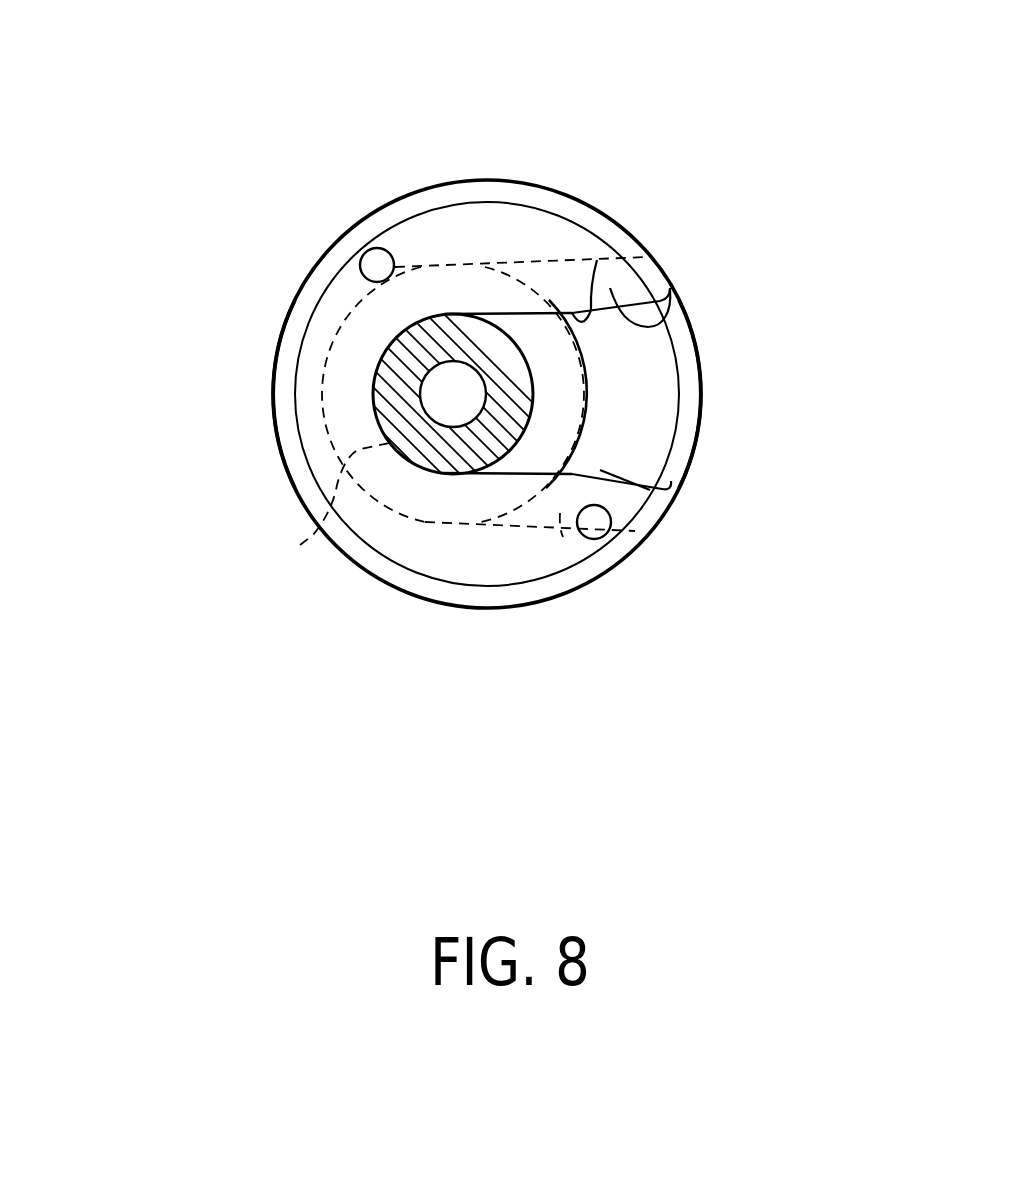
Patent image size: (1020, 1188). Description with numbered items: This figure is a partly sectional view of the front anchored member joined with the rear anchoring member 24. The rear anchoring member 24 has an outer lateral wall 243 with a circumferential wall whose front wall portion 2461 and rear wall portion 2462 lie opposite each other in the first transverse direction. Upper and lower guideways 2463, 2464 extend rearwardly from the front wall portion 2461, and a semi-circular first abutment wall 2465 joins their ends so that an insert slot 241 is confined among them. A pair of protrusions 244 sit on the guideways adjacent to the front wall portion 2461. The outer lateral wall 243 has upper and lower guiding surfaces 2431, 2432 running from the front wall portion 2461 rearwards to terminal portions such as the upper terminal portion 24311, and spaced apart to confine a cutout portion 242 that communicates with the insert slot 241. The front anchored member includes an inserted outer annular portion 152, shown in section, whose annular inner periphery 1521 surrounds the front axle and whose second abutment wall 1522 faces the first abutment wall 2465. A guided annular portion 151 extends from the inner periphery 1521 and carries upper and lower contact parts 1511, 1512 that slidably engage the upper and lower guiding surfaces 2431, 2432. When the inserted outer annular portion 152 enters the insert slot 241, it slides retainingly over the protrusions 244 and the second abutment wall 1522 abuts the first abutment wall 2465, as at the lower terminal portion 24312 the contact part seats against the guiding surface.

The rear anchoring member 24 is at (486, 192).
The cutout portion 242 is at (680, 405).
The rear wall portion 2462 is at (271, 367).
The front wall portion 2461 is at (698, 358).
The guided annular portion 151 is at (477, 463).
The inserted outer annular portion 152 is at (566, 425).
The upper terminal portion 24311 is at (422, 191).
The upper contact part 1511 is at (456, 313).
The lower flat edge of slot 24312 is at (433, 605).
The lower contact part 1512 is at (447, 474).
The outer lateral wall 243 is at (694, 399).
The upper guiding surface 2431 is at (597, 260).
The lower guiding surface 2432 is at (591, 473).
The insert slot 241 is at (338, 398).
The first abutment wall 2465 is at (227, 394).
The second abutment wall 1522 is at (327, 435).
The upper guideway 2463 is at (512, 267).
The lower guideway 2464 is at (509, 524).
The protrusions 244 is at (577, 282).
The annular inner periphery 1521 is at (300, 545).